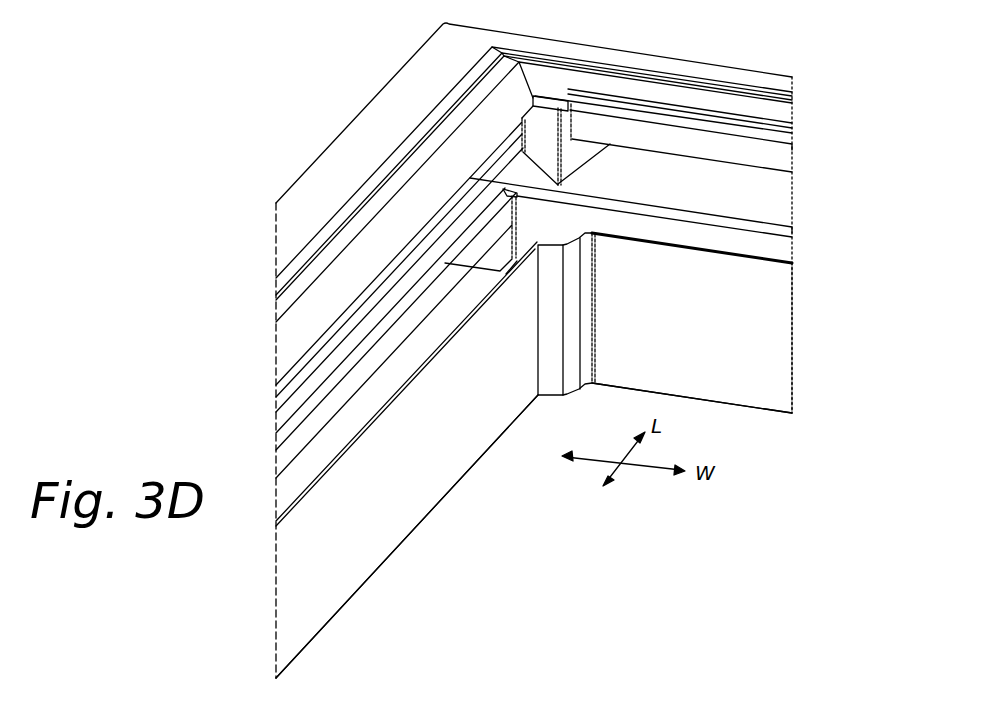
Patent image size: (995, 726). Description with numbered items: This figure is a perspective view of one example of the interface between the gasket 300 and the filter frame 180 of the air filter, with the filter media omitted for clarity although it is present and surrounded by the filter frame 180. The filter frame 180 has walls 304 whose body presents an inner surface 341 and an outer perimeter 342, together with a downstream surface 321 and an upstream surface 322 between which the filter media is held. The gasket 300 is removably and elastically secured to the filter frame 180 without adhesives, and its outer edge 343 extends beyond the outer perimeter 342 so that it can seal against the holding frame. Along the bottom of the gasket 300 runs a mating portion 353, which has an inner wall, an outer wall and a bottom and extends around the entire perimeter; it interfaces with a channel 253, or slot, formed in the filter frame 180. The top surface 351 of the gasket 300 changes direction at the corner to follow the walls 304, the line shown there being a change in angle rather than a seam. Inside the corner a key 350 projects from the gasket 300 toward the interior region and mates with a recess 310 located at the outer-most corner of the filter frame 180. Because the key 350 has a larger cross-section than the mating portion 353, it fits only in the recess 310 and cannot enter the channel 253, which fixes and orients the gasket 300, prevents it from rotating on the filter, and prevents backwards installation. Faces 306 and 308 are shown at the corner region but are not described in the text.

The gasket 300 is at (378, 63).
The outer edge 343 is at (356, 115).
The top surface 351 is at (330, 161).
The key 350 is at (559, 158).
The mating portion 353 is at (780, 158).
The outer perimeter 342 is at (760, 230).
The channel 253 is at (780, 248).
The recesses 310 is at (571, 241).
The flat end face 306 is at (550, 355).
The curved end face 308 is at (585, 300).
The walls 304 is at (780, 300).
The inner surface 341 is at (780, 340).
The filter frame 180 is at (766, 383).
The downstream surface 321 is at (350, 447).
The upstream surface 322 is at (350, 597).